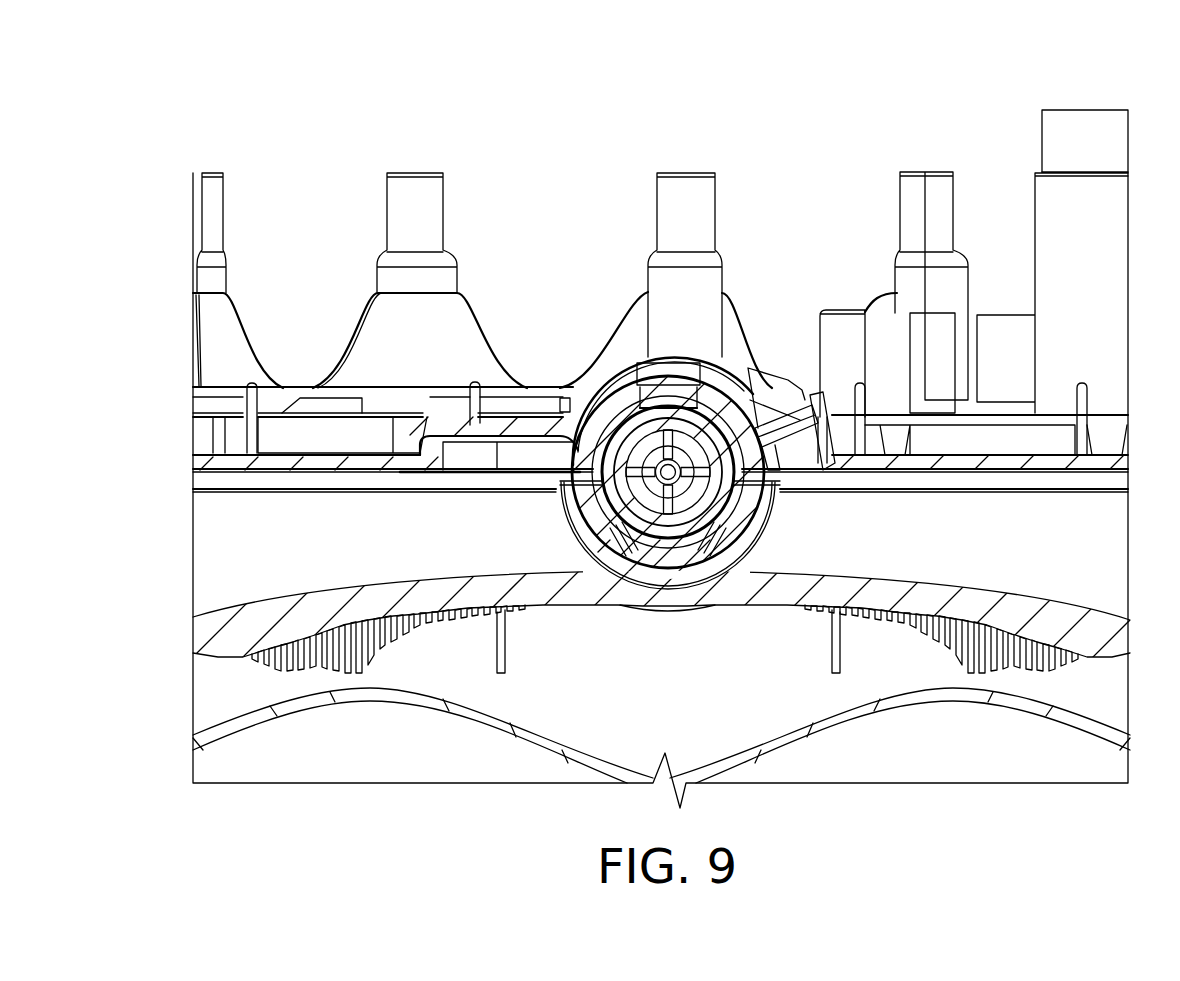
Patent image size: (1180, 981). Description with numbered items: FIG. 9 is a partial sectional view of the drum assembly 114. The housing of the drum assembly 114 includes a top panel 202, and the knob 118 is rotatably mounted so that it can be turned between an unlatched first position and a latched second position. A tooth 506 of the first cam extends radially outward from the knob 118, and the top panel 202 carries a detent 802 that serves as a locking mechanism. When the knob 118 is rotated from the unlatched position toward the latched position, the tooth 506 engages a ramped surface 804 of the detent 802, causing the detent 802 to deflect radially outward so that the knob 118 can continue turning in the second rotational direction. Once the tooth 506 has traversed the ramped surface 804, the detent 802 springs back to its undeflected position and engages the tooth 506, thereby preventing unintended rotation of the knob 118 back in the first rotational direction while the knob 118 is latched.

The drum assembly 114 is at (345, 118).
The top panel 202 is at (317, 386).
The knob 118 is at (605, 400).
The tooth 506 is at (793, 418).
The detent 802 is at (842, 403).
The ramped surface 804 is at (802, 400).